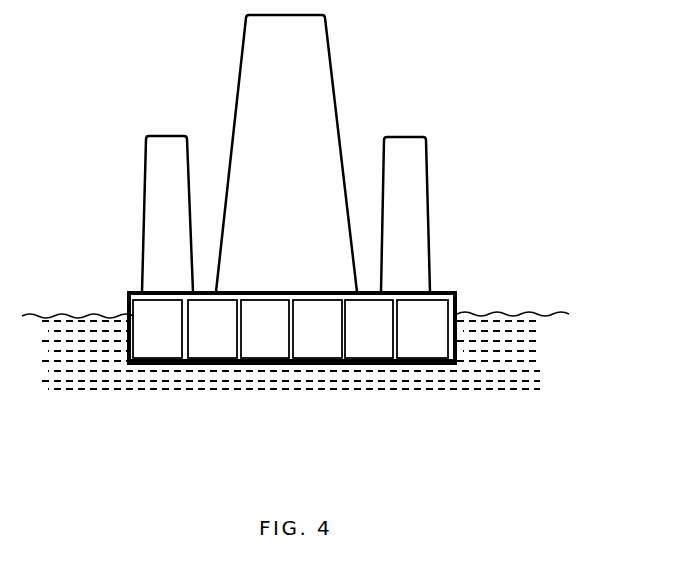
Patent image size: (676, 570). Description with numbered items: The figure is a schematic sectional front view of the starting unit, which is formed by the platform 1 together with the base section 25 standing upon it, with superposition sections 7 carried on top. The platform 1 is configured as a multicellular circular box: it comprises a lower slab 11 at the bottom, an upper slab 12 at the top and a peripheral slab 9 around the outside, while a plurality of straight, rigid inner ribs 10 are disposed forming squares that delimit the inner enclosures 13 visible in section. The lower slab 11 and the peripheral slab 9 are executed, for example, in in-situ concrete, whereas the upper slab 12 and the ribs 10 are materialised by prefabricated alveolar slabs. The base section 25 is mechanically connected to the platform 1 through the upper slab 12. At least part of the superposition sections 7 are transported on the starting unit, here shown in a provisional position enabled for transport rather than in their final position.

The platform 1 is at (308, 336).
The superposition sections 7 is at (187, 152).
The peripheral slab 9 is at (126, 310).
The inner ribs 10 is at (187, 328).
The lower slab 11 is at (155, 368).
The upper slab 12 is at (412, 296).
The inner enclosures 13 is at (312, 335).
The base section 25 is at (331, 64).